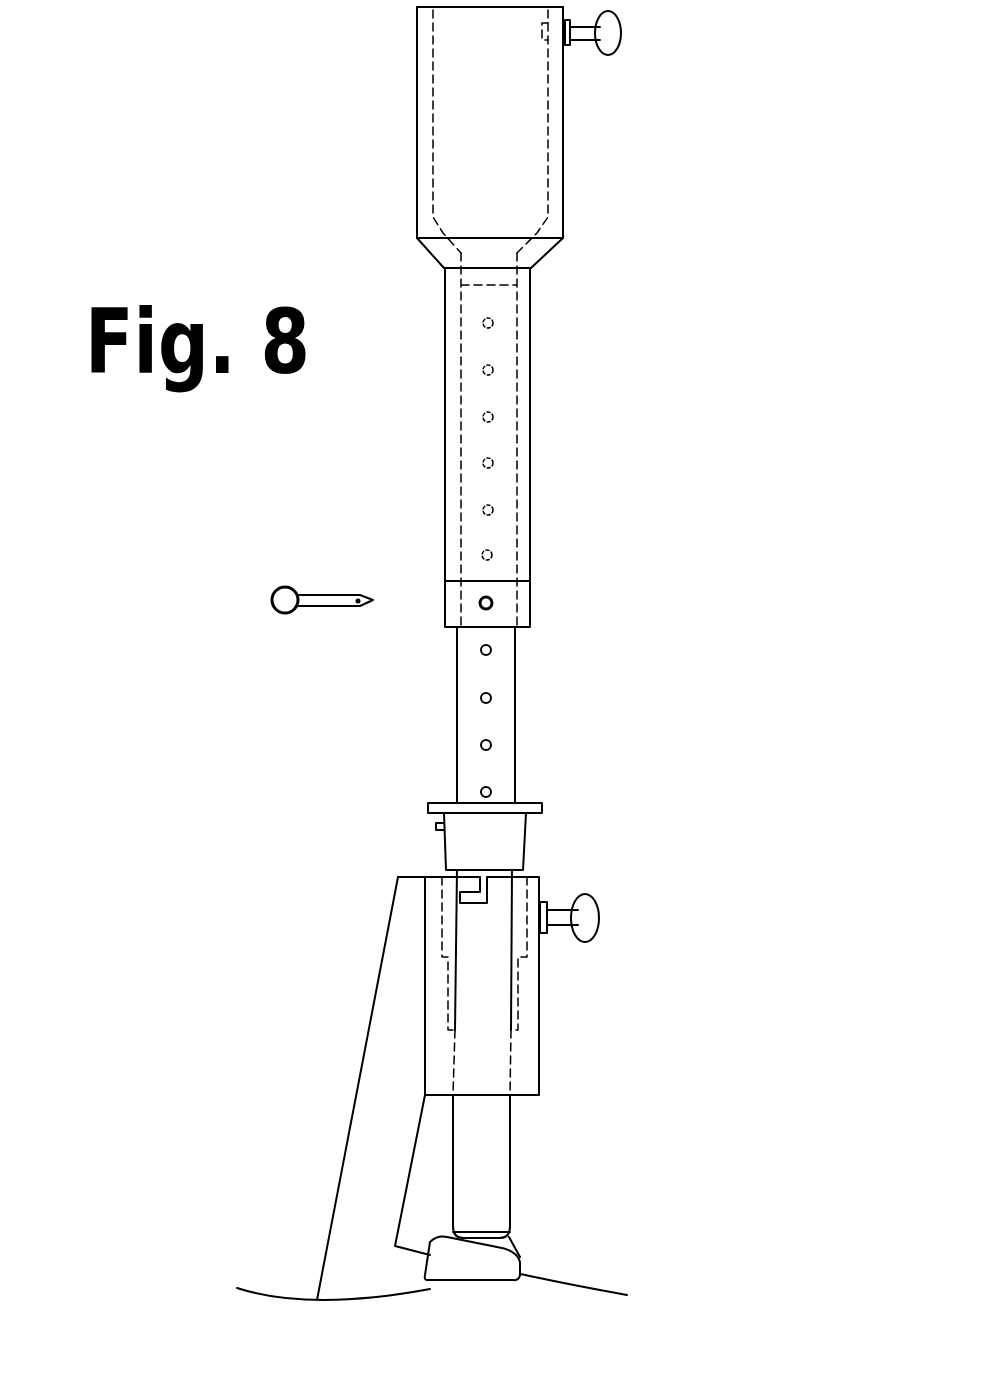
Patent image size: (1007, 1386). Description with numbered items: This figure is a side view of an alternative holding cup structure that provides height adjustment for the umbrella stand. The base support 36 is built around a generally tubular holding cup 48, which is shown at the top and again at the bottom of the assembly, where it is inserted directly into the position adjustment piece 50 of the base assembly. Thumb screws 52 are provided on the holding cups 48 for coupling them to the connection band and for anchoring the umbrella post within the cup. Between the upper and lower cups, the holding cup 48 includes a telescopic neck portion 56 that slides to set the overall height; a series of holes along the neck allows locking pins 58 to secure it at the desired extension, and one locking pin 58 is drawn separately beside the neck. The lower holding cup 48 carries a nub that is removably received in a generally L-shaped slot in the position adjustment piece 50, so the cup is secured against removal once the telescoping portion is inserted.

The base support 36 is at (577, 272).
The holding cup 48 is at (528, 163).
The position adjustment piece 50 is at (523, 1067).
The thumb screws 52 is at (607, 32).
The telescopic neck portion 56 is at (557, 640).
The locking pins 58 is at (325, 600).